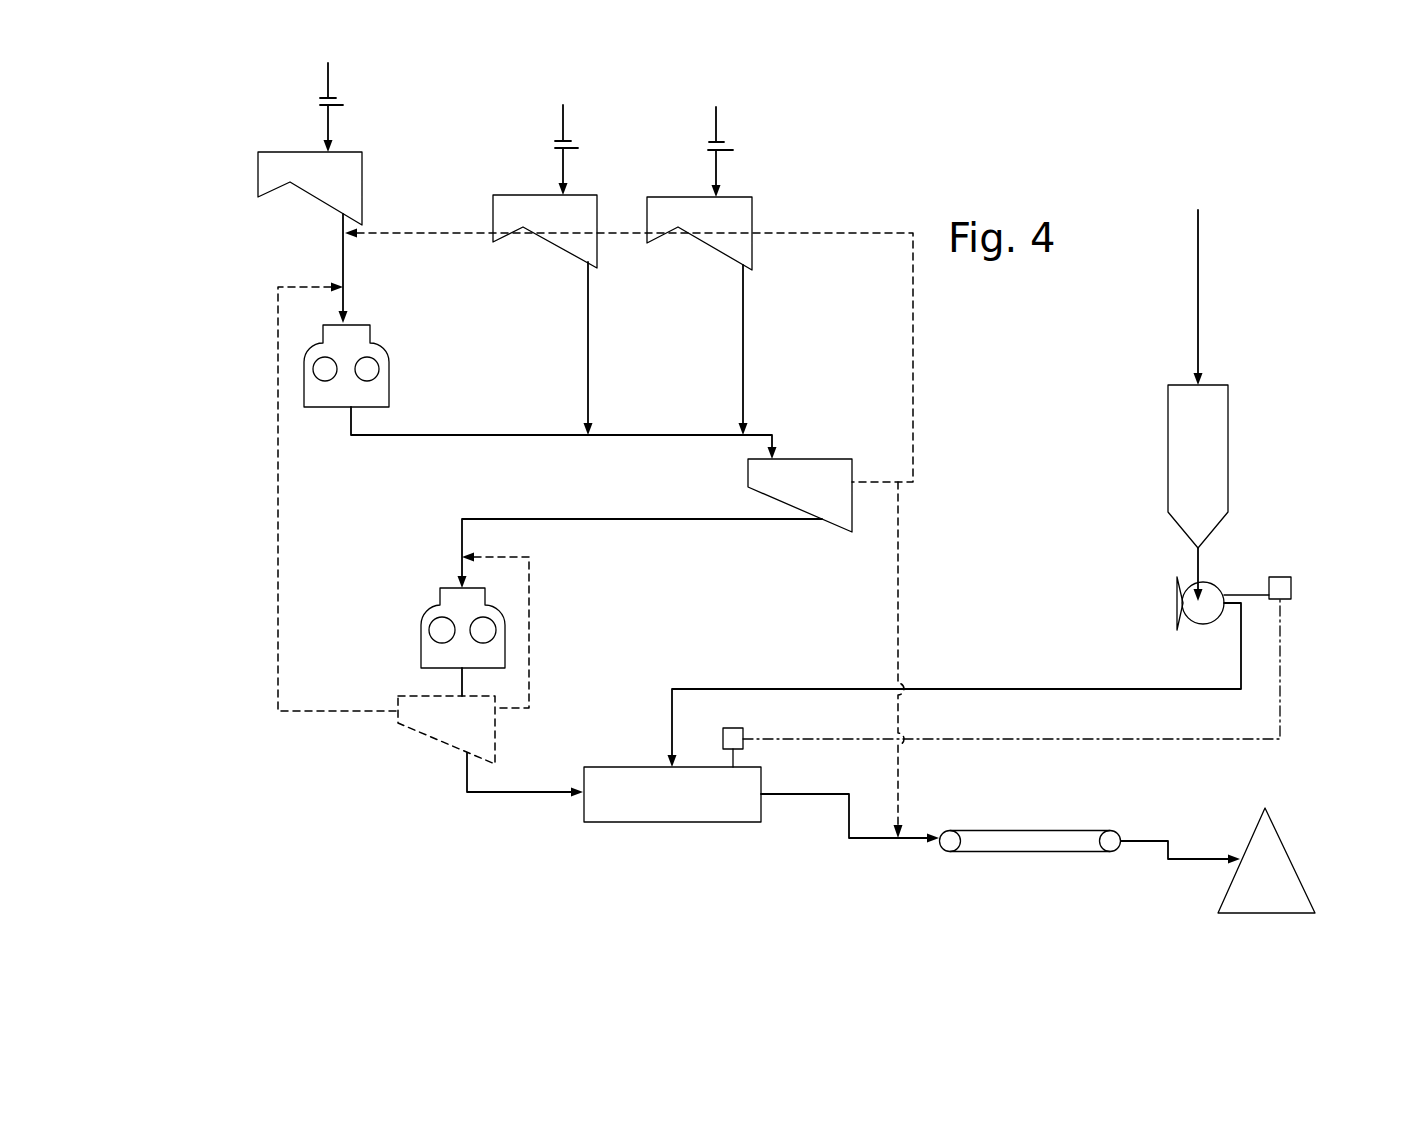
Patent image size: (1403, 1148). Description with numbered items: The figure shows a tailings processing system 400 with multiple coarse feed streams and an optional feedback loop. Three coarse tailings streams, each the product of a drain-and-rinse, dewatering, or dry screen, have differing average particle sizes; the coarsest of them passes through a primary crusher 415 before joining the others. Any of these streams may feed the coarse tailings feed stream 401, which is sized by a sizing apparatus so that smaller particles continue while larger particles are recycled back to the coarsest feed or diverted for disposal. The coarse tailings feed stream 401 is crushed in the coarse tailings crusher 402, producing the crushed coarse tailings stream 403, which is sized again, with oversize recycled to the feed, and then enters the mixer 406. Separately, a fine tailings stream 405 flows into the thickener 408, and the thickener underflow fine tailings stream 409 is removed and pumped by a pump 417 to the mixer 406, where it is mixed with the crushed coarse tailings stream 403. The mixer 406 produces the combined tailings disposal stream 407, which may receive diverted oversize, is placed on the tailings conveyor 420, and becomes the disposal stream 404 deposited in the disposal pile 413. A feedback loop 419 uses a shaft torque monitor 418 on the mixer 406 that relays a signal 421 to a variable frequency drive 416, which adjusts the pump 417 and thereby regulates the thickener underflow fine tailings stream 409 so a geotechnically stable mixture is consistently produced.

The system 400 is at (380, 802).
The coarse tailings feed stream 401 is at (600, 519).
The coarse tailings crusher 402 is at (422, 640).
The crushed coarse tailings stream 403 is at (507, 790).
The disposal stream 404 is at (1170, 840).
The fine tailings stream 405 is at (1198, 298).
The mixer 406 is at (668, 822).
The combined tailings disposal stream 407 is at (848, 815).
The thickener 408 is at (1230, 455).
The thickener underflow fine tailings stream 409 is at (1023, 690).
The disposal pile 413 is at (1219, 911).
The primary crusher 415 is at (388, 365).
The variable frequency drive 416 is at (1287, 577).
The pump 417 is at (1178, 607).
The shaft torque monitor 418 is at (743, 728).
The feedback loop 419 is at (1258, 758).
The tailings conveyor 420 is at (1020, 853).
The signal 421 is at (1115, 742).